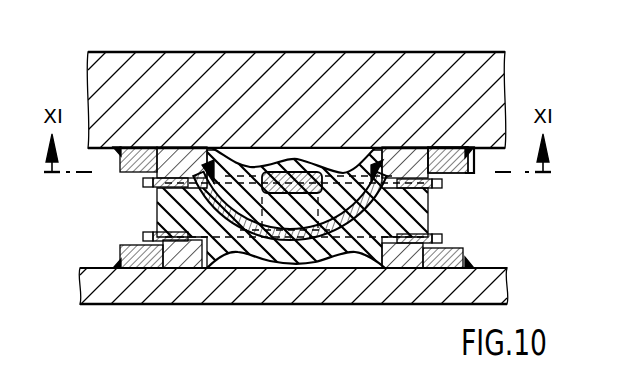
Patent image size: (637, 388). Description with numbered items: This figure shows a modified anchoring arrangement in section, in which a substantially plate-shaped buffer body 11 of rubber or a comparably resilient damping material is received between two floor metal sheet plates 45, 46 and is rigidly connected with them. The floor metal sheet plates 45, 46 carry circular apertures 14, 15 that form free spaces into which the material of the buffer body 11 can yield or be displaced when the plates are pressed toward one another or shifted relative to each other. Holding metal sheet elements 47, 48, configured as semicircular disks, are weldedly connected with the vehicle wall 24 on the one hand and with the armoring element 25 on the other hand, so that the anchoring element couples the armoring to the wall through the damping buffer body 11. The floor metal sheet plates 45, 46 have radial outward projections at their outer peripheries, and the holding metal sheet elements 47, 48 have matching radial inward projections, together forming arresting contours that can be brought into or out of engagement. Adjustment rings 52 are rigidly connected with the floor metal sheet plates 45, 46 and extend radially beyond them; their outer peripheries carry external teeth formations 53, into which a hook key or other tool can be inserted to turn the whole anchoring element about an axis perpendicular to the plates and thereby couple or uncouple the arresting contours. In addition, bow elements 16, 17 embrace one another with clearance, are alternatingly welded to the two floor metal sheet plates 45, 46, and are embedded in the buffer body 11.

The buffer body 11 is at (437, 217).
The circular aperture 14 is at (212, 265).
The circular aperture 15 is at (215, 150).
The bow element 16 is at (300, 172).
The bow element 17 is at (257, 228).
The vehicle wall 24 is at (107, 284).
The armoring element 25 is at (365, 80).
The floor metal sheet plate 45 is at (404, 257).
The floor metal sheet plate 46 is at (410, 162).
The holding metal sheet element 47 is at (463, 256).
The holding metal sheet element 48 is at (450, 173).
The adjustment ring 52 is at (160, 200).
The external teeth formation 53 is at (143, 182).